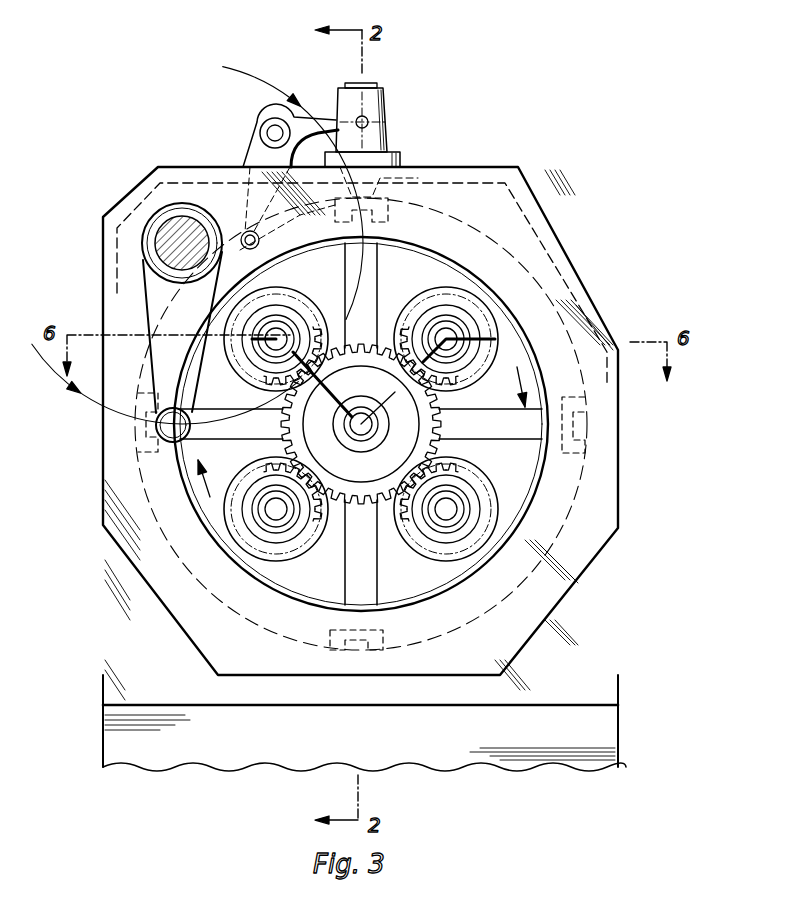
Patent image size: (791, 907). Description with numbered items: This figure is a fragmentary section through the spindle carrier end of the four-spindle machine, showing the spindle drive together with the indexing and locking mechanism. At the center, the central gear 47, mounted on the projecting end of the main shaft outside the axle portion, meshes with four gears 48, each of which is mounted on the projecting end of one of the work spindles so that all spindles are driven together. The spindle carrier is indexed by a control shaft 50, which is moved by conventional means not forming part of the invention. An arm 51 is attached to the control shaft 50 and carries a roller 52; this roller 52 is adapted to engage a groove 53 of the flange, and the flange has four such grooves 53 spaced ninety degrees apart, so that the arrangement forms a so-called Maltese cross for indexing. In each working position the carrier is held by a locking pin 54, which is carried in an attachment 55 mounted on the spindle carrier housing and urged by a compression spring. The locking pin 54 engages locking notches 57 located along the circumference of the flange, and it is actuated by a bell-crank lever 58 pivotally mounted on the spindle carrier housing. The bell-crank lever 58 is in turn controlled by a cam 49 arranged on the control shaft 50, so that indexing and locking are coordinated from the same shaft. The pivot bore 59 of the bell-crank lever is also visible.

The central gear 47 is at (412, 333).
The gears 48 is at (300, 352).
The cam 49 is at (246, 231).
The control shaft 50 is at (180, 232).
The arm 51 is at (155, 311).
The roller 52 is at (152, 434).
The groove 53 is at (377, 252).
The locking pin 54 is at (370, 180).
The attachment 55 is at (386, 97).
The locking notches 57 is at (389, 208).
The bell-crank lever 58 is at (312, 125).
The bore 59 is at (272, 130).